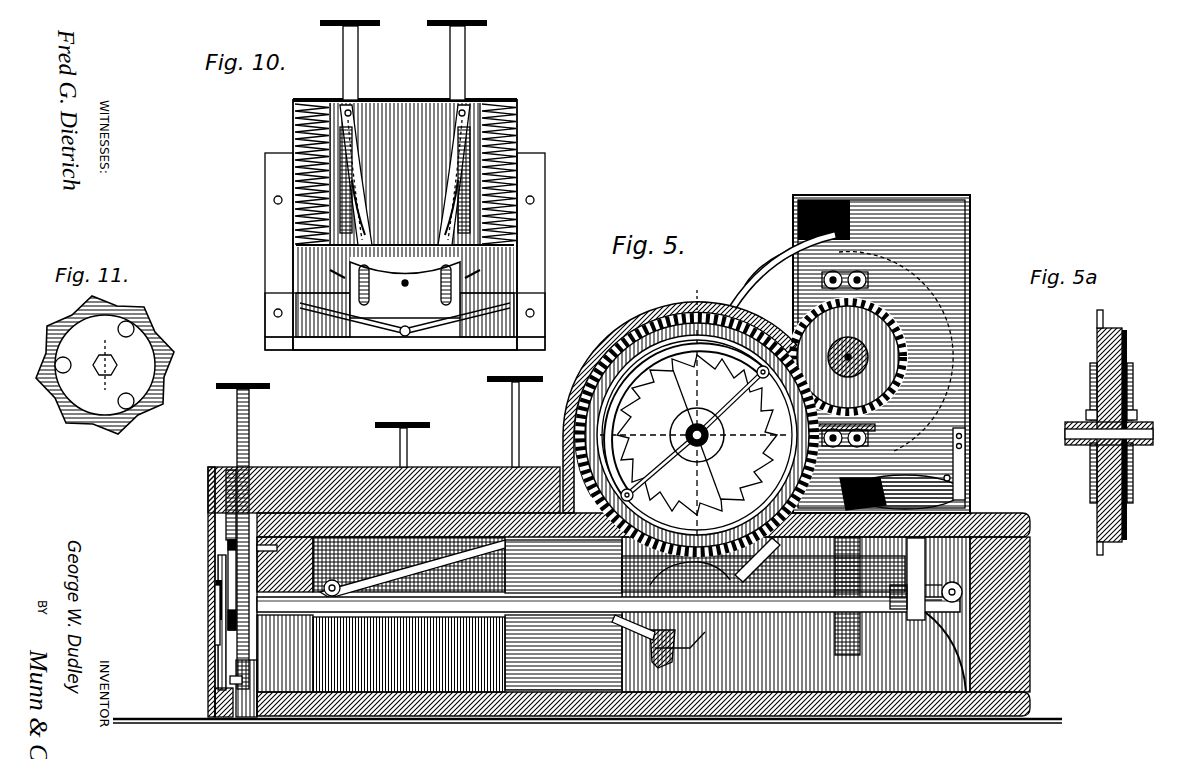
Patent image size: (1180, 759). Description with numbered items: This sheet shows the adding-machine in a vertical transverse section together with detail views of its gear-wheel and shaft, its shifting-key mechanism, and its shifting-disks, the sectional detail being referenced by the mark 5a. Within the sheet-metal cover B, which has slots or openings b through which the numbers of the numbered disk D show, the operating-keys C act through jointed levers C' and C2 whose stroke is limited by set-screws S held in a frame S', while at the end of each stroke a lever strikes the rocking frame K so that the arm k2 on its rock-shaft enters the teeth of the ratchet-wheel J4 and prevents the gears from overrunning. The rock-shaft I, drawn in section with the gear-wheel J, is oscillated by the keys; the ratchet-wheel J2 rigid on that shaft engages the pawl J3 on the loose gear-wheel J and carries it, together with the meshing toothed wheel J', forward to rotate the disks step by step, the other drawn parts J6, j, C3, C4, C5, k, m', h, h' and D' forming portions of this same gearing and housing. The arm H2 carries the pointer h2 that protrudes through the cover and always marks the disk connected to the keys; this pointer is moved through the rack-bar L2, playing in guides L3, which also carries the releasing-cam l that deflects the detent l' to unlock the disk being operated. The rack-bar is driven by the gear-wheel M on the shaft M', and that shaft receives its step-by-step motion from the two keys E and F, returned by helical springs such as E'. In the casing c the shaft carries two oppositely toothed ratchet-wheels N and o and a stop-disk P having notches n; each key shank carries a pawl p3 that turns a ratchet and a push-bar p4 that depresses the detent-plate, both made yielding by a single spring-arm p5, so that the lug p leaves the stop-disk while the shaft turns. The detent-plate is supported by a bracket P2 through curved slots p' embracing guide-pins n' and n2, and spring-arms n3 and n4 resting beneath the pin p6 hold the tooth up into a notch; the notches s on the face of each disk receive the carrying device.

In FIG. 10, the key E is at (350, 60).
In FIG. 5, the key E is at (243, 536).
In FIG. 10, the key F is at (457, 60).
In FIG. 10, the helical spring E' is at (292, 174).
In FIG. 10, the operating-keys C is at (405, 224).
In FIG. 5, the operating-keys C is at (465, 413).
In FIG. 10, the pawl p3 is at (358, 164).
In FIG. 5, the pawl p3 is at (262, 504).
In FIG. 10, the spring-arm p5 is at (352, 187).
In FIG. 10, the push-bar p4 is at (365, 205).
In FIG. 5, the push-bar p4 is at (226, 504).
In FIG. 10, the curved slot p' is at (331, 270).
In FIG. 10, the lug or tooth p is at (474, 270).
In FIG. 10, the pin or offset p6 is at (412, 280).
In FIG. 5, the pin or offset p6 is at (250, 682).
In FIG. 10, the guide-pin n' is at (372, 287).
In FIG. 10, the guide-pin n2 is at (434, 287).
In FIG. 10, the spring-arm n3 is at (378, 338).
In FIG. 5, the spring-arm n3 is at (232, 718).
In FIG. 10, the spring-arm n4 is at (452, 338).
In FIG. 5, the spring-arm n4 is at (248, 718).
In FIG. 11, the ratchet-wheel N is at (52, 327).
In FIG. 5, the ratchet-wheel N is at (228, 543).
In FIG. 11, the ratchet-wheel o is at (150, 322).
In FIG. 5, the ratchet-wheel o is at (265, 548).
In FIG. 11, the notch n is at (98, 365).
In FIG. 5, the notch n is at (192, 615).
In FIG. 11, the shaft M' is at (105, 360).
In FIG. 5, the shaft M' is at (608, 602).
In FIG. 11, the stop-disk P is at (112, 387).
In FIG. 5, the stop-disk P is at (218, 572).
In FIG. 5, the bracket P2 is at (215, 690).
In FIG. 5, the casing c is at (212, 467).
In FIG. 5, the lever C2 is at (412, 569).
In FIG. 5, the roller C3 is at (332, 592).
In FIG. 5, the lever C' is at (763, 565).
In FIG. 5, the bearing C4 is at (962, 596).
In FIG. 5, the spring C5 is at (934, 652).
In FIG. 5, the frame S' is at (563, 566).
In FIG. 5, the set-screw S is at (563, 652).
In FIG. 5, the rocking frame K is at (645, 625).
In FIG. 5, the pin k is at (749, 662).
In FIG. 5, the arm k2 is at (731, 584).
In FIG. 5, the link m' is at (699, 662).
In FIG. 5, the gear-wheel M is at (835, 596).
In FIG. 5, the releasing-cam l is at (907, 579).
In FIG. 5, the detent or pawl l' is at (989, 495).
In FIG. 5, the rack-bar L2 is at (793, 525).
In FIG. 5, the guide L3 is at (883, 525).
In FIG. 5, the cover B is at (655, 320).
In FIG. 5A, the gear-wheel J is at (1119, 433).
In FIG. 5, the gear-wheel J is at (697, 435).
In FIG. 5, the toothed wheel J' is at (848, 357).
In FIG. 5A, the ratchet-wheel J2 is at (1108, 376).
In FIG. 5, the ratchet-wheel J2 is at (697, 426).
In FIG. 5, the pawl J3 is at (695, 435).
In FIG. 5, the ratchet-wheel J4 is at (697, 435).
In FIG. 5A, the curved arm J6 is at (1097, 311).
In FIG. 5, the curved arm J6 is at (618, 350).
In FIG. 5, the ratchet wheel j is at (697, 435).
In FIG. 5A, the rock-shaft I is at (1076, 447).
In FIG. 5, the housing D' is at (881, 354).
In FIG. 5, the numbered disk D is at (890, 379).
In FIG. 5, the arm H2 is at (896, 343).
In FIG. 5, the hub h is at (815, 357).
In FIG. 5, the hub h' is at (860, 357).
In FIG. 5, the pointer h2 is at (775, 250).
In FIG. 5, the slot or opening b is at (787, 264).
In FIG. 5, the gouged-out notch s is at (883, 286).
In FIG. 5, the section line 5a is at (735, 283).